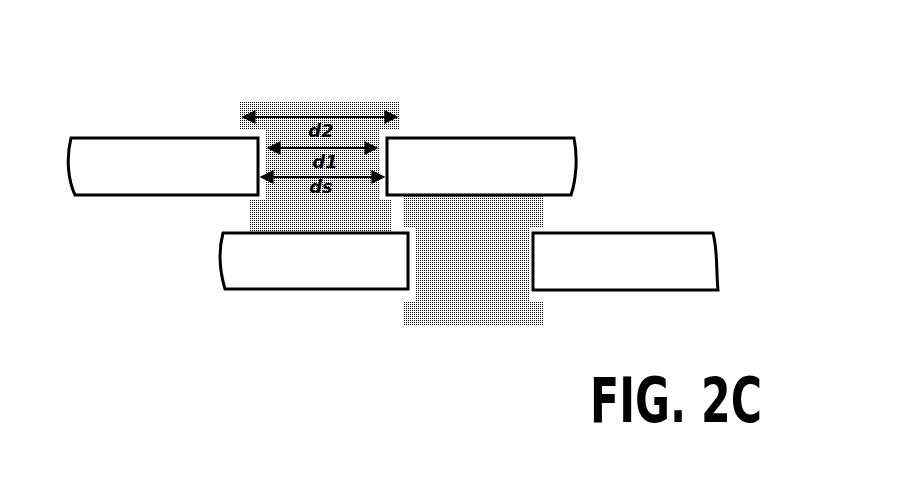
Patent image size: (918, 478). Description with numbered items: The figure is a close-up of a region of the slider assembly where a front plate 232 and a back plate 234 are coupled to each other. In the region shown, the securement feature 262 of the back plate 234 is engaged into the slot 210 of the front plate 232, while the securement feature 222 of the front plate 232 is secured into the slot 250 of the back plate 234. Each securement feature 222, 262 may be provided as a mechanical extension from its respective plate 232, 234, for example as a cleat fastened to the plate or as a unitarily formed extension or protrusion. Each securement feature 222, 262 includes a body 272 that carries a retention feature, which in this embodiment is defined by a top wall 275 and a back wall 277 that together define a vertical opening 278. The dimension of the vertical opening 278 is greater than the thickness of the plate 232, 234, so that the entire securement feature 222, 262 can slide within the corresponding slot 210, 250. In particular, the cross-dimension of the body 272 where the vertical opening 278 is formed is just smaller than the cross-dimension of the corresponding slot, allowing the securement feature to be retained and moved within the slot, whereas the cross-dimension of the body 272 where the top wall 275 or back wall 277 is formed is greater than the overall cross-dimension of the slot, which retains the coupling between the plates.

The slot 210 is at (257, 162).
The securement feature 222 is at (442, 330).
The front plate 232 is at (148, 150).
The back plate 234 is at (310, 282).
The slot 250 is at (410, 300).
The securement feature 262 is at (353, 98).
The body 272 is at (300, 133).
The top wall 275 is at (255, 135).
The back wall 277 is at (253, 205).
The vertical opening 278 is at (256, 188).